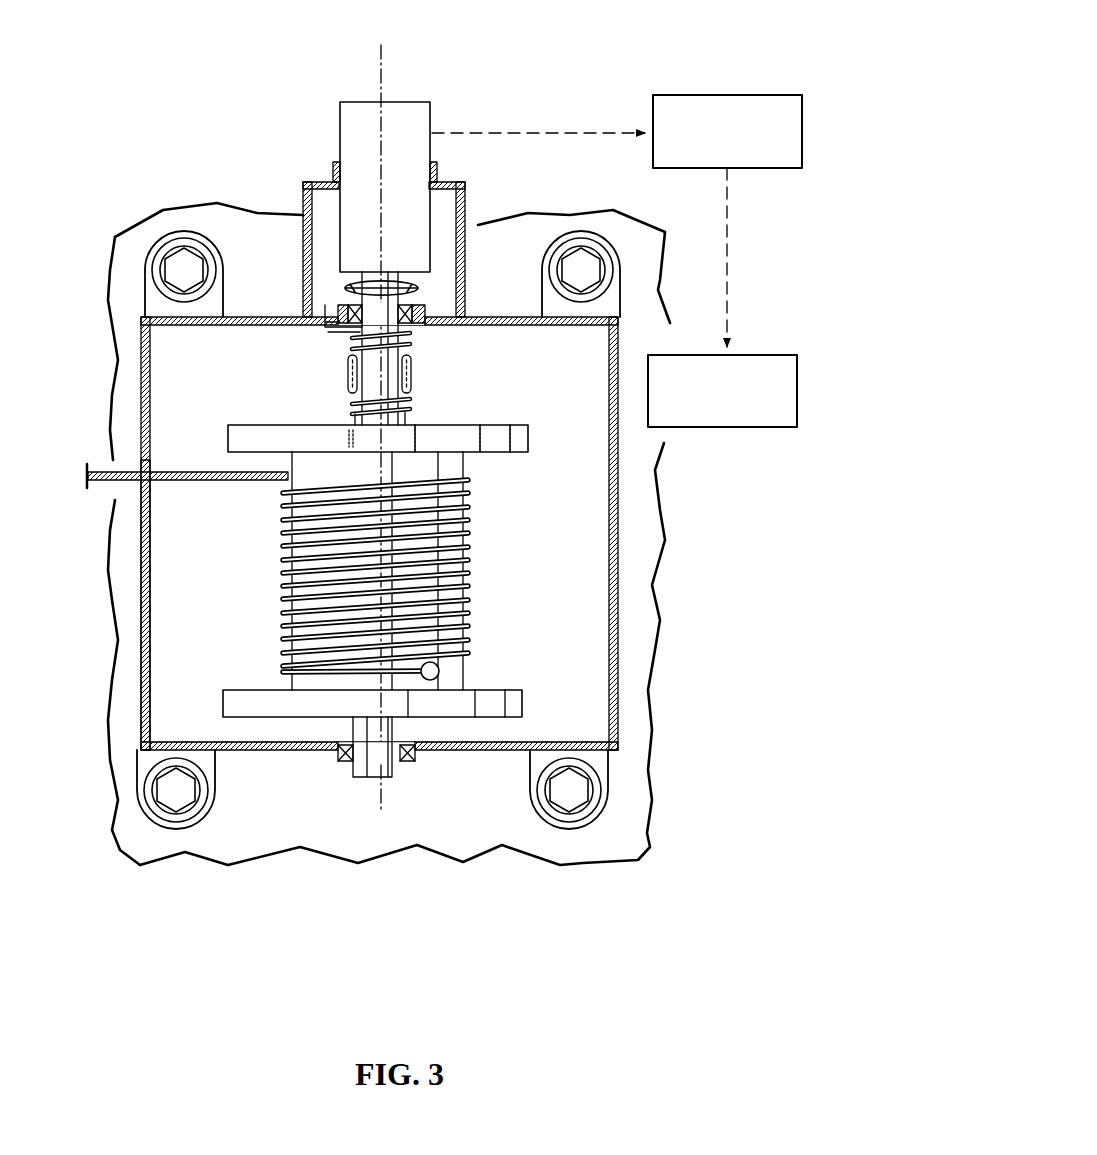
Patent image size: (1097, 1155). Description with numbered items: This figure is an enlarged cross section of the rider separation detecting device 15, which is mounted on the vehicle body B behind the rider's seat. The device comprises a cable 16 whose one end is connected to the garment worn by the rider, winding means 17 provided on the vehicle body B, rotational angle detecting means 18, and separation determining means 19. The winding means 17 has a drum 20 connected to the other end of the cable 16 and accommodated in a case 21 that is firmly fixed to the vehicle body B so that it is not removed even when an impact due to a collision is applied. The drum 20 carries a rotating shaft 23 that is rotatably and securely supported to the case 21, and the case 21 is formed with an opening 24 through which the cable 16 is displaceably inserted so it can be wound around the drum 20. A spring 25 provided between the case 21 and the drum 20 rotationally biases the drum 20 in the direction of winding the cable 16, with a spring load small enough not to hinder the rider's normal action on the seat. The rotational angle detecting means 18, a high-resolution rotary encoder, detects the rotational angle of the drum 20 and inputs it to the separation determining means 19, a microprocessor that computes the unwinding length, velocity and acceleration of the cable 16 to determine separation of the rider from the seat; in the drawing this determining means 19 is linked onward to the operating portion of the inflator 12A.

The vehicle body B is at (260, 835).
The rider separation detecting device 15 is at (462, 768).
The cable 16 is at (195, 480).
The winding means 17 is at (482, 663).
The rotational angle detecting means 18 is at (396, 199).
The separation determining means 19 is at (760, 95).
The drum 20 is at (457, 465).
The case 21 is at (612, 570).
The rotating shaft 23 is at (363, 375).
The opening 24 is at (142, 643).
The spring 25 is at (410, 353).
The operating portion of inflator 12A is at (746, 427).